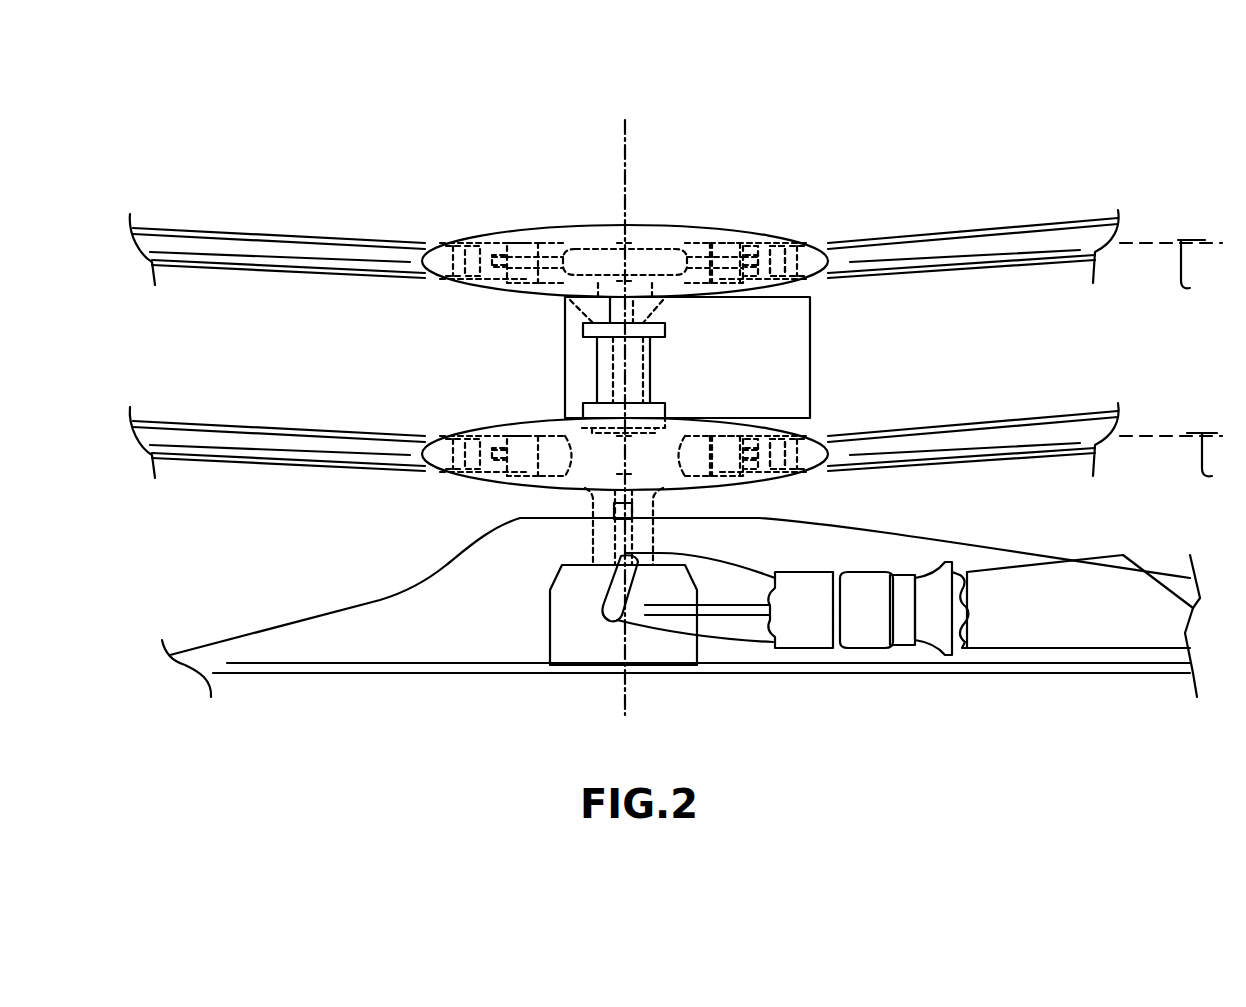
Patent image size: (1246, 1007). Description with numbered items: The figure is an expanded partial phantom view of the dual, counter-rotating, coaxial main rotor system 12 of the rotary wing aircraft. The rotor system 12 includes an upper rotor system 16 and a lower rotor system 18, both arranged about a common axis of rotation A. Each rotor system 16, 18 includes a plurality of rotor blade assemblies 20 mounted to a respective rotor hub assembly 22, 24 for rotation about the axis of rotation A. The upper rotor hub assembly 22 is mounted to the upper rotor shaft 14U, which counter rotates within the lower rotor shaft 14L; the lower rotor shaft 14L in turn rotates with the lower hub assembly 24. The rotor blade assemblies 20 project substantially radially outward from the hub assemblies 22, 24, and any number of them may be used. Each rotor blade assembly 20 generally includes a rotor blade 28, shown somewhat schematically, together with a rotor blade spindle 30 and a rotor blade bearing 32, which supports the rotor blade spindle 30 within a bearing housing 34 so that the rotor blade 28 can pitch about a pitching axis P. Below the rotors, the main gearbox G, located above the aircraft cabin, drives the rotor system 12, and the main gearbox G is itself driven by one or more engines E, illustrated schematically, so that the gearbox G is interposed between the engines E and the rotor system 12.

The axis of rotation A is at (625, 137).
The pitching axis P is at (1172, 367).
The dual, counter-rotating, coaxial main rotor system 12 is at (414, 512).
The upper rotor shaft 14U is at (608, 357).
The lower rotor shaft 14L is at (597, 378).
The upper rotor system 16 is at (860, 216).
The lower rotor system 18 is at (834, 412).
The rotor blade assembly 20 is at (1034, 412).
The rotor hub assembly 22 is at (655, 225).
The lower hub assembly 24 is at (657, 473).
The rotor blade 28 is at (968, 250).
The rotor blade spindle 30 is at (817, 226).
The rotor blade bearing 32 is at (778, 226).
The bearing housing 34 is at (718, 226).
The main gearbox G is at (590, 633).
The engine E is at (803, 627).